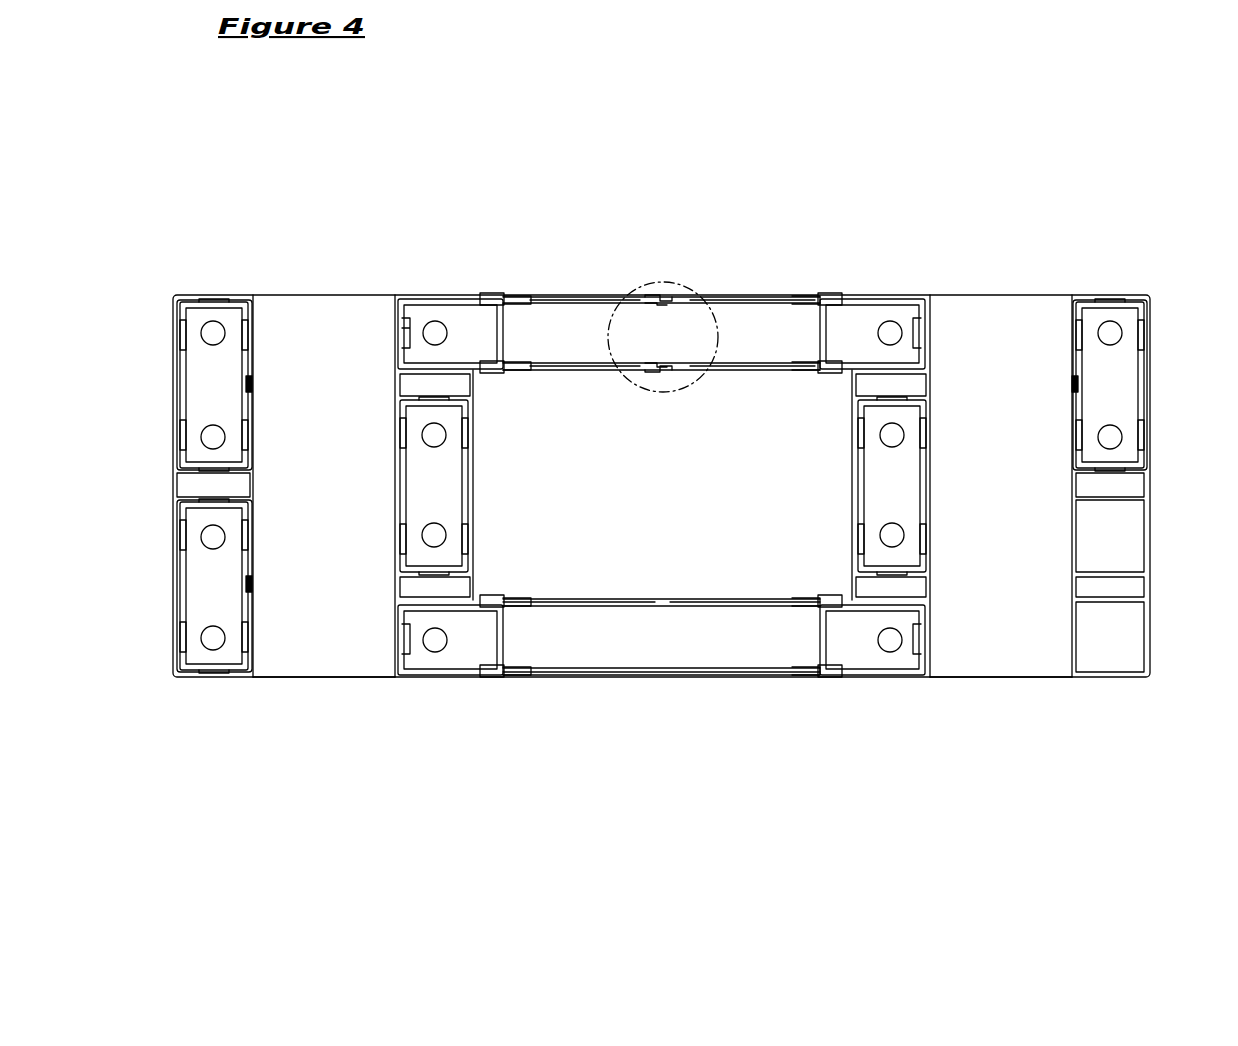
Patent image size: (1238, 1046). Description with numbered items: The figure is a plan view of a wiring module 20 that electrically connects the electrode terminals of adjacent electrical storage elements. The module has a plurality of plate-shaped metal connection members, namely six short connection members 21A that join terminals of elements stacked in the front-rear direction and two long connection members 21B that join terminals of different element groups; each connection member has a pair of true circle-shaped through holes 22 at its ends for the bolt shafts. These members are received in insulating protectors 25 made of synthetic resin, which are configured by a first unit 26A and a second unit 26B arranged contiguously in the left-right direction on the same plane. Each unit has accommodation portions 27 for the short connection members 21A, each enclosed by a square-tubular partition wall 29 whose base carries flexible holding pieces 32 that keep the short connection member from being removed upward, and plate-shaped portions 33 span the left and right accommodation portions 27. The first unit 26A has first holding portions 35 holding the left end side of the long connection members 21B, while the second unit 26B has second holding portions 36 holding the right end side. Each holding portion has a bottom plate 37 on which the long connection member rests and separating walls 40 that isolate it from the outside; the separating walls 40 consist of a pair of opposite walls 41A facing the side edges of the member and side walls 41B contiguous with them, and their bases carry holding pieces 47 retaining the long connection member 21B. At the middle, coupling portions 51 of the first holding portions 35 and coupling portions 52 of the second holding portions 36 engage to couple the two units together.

The wiring module 20 is at (803, 190).
The short connection member 21A is at (198, 360).
The long connection member 21B is at (595, 320).
The through hole 22 is at (213, 333).
The insulating protector 25 is at (727, 762).
The first unit 26A is at (581, 675).
The second unit 26B is at (725, 684).
The accommodation portion 27 is at (262, 355).
The partition wall 29 is at (180, 335).
The holding piece 32 is at (245, 385).
The plate-shaped portion 33 is at (330, 655).
The first holding portion 35 is at (548, 280).
The second holding portion 36 is at (773, 275).
The bottom plate 37 is at (567, 300).
The separating wall 40 is at (510, 230).
The opposite wall 41A is at (530, 296).
The side wall 41B is at (415, 330).
The holding piece 47 is at (500, 305).
The coupling portion 51 is at (655, 300).
The coupling portion 52 is at (672, 300).